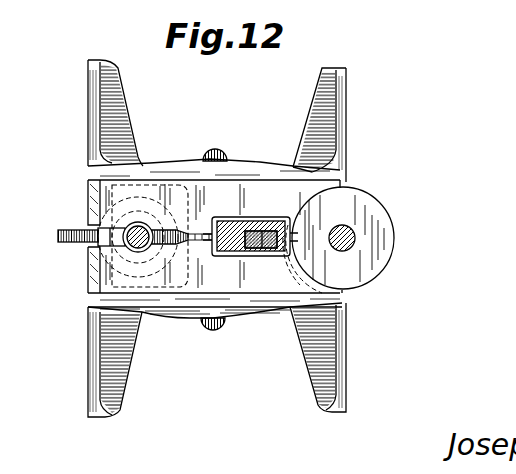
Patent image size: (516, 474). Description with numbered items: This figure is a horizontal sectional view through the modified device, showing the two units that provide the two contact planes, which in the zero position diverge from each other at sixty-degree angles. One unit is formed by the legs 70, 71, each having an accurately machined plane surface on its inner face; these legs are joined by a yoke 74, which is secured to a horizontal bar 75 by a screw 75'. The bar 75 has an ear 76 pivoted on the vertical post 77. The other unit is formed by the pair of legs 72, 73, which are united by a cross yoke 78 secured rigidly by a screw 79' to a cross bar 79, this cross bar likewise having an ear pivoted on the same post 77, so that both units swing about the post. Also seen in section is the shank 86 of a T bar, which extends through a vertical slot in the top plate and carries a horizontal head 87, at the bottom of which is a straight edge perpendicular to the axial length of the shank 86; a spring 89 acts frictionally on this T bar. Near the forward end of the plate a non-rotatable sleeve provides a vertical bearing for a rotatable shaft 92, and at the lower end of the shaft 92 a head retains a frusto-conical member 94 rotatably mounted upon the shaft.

The leg 70 is at (113, 389).
The leg 71 is at (321, 380).
The leg 72 is at (120, 92).
The leg 73 is at (320, 93).
The yoke 74 is at (192, 313).
The horizontal bar 75 is at (215, 315).
The screw 75' is at (211, 348).
The ear 76 is at (377, 230).
The vertical post 77 is at (355, 246).
The cross yoke 78 is at (171, 158).
The cross bar 79 is at (215, 206).
The screw 79' is at (222, 130).
The shank 86 is at (258, 225).
The spring 89 is at (272, 252).
The horizontal head 87 is at (72, 230).
The frusto-conical member 94 is at (100, 237).
The rotatable shaft 92 is at (130, 243).